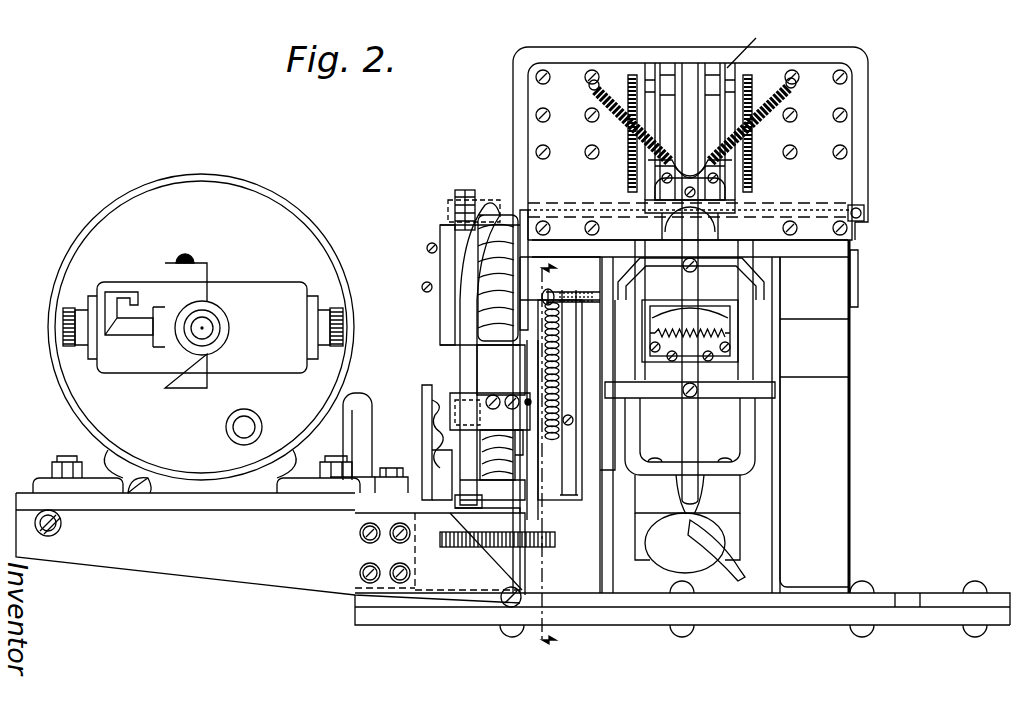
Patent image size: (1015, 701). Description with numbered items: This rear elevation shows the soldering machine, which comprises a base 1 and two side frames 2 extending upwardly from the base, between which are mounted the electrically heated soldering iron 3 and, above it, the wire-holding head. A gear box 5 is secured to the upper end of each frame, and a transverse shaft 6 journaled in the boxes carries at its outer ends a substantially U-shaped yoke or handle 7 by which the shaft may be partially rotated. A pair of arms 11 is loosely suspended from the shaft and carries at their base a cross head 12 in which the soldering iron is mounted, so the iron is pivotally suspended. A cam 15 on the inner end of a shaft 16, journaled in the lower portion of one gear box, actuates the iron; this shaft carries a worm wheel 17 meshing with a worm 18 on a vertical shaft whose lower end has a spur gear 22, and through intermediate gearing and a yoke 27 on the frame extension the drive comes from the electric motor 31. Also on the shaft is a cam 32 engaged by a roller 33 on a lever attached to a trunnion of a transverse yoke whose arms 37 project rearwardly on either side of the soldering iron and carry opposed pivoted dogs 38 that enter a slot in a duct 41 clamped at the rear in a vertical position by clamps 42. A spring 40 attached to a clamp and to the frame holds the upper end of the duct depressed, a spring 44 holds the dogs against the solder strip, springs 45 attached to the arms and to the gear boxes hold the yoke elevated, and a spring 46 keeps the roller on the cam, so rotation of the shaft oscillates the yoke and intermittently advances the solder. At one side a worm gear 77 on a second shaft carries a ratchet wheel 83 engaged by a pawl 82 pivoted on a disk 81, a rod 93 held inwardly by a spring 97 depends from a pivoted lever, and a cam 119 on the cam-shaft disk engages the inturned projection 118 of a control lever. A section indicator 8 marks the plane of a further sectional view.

The base 1 is at (655, 612).
The side frame 2 is at (572, 554).
The soldering iron 3 is at (690, 528).
The gear box 5 is at (540, 252).
The shaft 6 is at (586, 212).
The yoke or handle 7 is at (836, 62).
The section line 8 is at (545, 455).
The arms 11 is at (630, 416).
The cross head 12 is at (726, 493).
The cam 15 is at (615, 470).
The shaft 16 is at (535, 400).
The worm wheel 17 is at (497, 446).
The worm 18 is at (536, 406).
The spur gear 22 is at (556, 538).
The yoke 27 is at (365, 410).
The electric motor 31 is at (284, 218).
The cam 32 is at (568, 372).
The roller 33 is at (574, 474).
The arms 37 is at (658, 362).
The dogs 38 is at (690, 316).
The spring 40 is at (618, 122).
The duct 41 is at (690, 72).
The clamps 42 is at (728, 168).
The spring 44 is at (732, 340).
The springs 45 is at (628, 182).
The spring 46 is at (571, 304).
The worm gear 77 is at (485, 290).
The disk 81 is at (442, 238).
The pawl 82 is at (432, 246).
The ratchet wheel 83 is at (475, 322).
The rod 93 is at (458, 372).
The spring 97 is at (445, 464).
The inturned projection 118 is at (450, 400).
The cam 119 is at (436, 456).